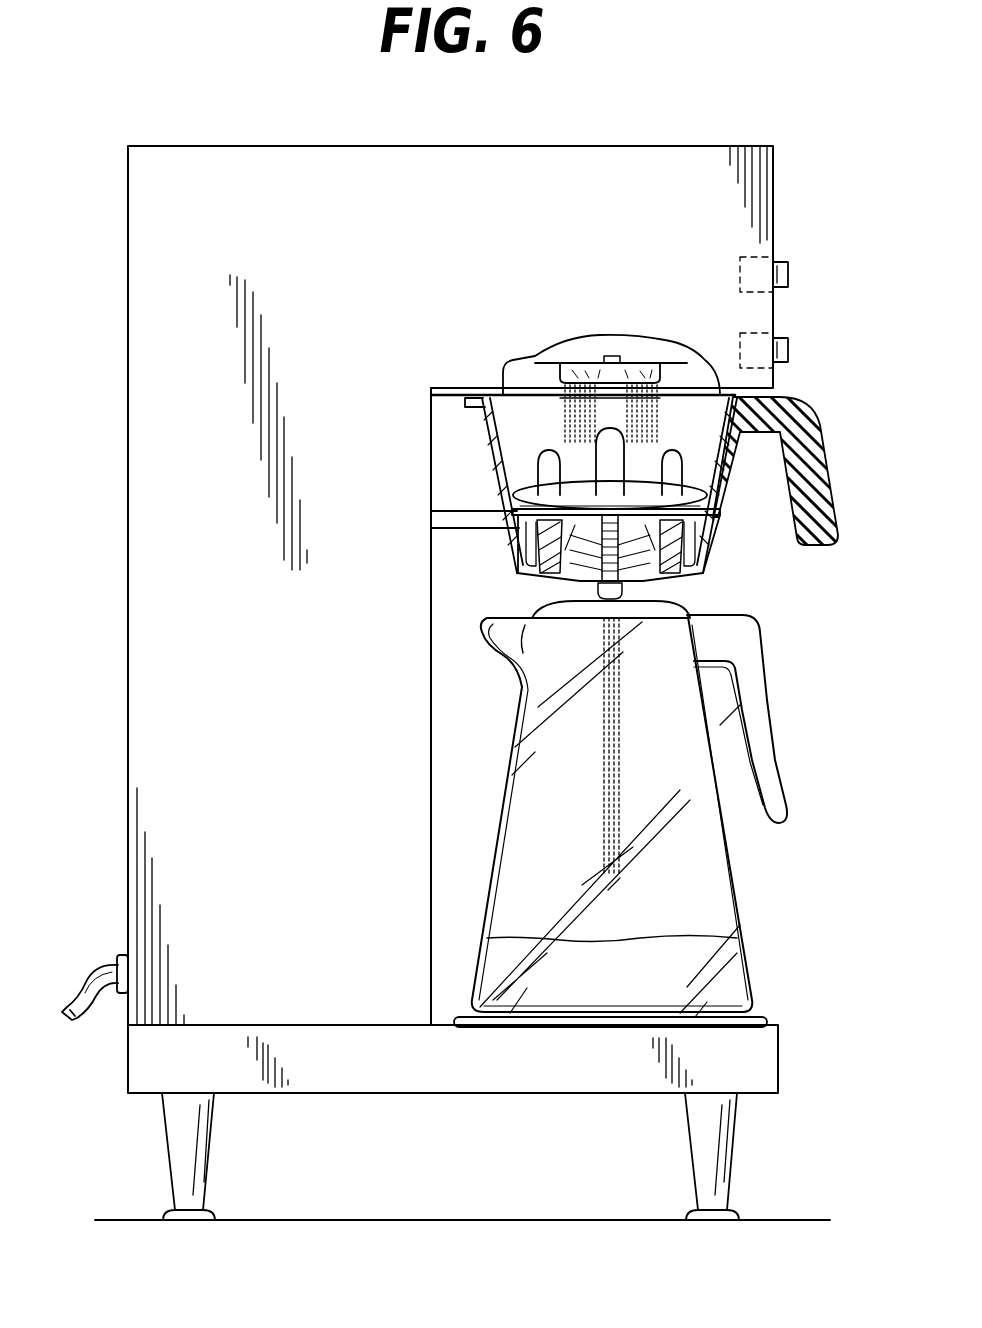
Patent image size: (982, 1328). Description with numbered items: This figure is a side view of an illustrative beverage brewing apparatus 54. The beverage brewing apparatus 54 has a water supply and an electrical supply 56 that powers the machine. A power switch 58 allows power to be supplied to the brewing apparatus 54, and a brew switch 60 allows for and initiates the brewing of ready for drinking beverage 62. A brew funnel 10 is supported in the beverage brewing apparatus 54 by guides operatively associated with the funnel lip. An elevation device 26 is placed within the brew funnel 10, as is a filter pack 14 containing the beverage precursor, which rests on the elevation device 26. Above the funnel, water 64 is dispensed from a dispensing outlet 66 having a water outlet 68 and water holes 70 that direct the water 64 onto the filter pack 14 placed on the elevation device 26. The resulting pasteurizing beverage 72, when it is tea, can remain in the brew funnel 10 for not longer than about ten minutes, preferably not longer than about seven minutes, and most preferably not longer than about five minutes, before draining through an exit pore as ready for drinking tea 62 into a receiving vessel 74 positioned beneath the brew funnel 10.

The beverage brewing apparatus 54 is at (160, 124).
The electrical supply 56 is at (84, 984).
The power switch 58 is at (789, 272).
The brew switch 60 is at (790, 350).
The brew funnel 10 is at (470, 433).
The filter pack 14 is at (512, 496).
The elevation device 26 is at (500, 513).
The water 64 is at (562, 417).
The dispensing outlet 66 is at (640, 386).
The water outlet 68 is at (608, 365).
The water holes 70 is at (640, 390).
The pasteurizing beverage 72 is at (706, 553).
The receiving vessel 74 is at (493, 862).
The ready for drinking beverage 62 is at (493, 973).